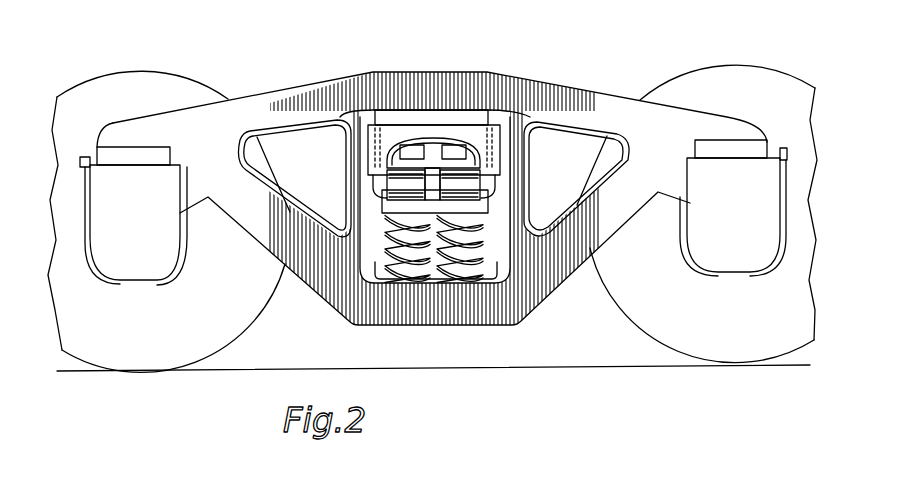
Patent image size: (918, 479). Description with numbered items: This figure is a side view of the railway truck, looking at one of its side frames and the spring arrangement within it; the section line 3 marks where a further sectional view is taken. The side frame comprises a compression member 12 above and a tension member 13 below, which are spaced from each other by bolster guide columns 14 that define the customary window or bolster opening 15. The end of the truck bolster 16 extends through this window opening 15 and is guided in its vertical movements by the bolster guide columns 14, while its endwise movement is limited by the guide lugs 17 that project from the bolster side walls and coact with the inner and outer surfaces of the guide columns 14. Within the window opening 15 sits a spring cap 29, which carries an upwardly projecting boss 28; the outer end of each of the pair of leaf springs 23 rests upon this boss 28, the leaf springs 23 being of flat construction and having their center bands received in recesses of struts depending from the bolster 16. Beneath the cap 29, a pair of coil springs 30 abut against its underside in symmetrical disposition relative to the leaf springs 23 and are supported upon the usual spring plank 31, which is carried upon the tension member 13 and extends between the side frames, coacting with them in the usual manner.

The section line 3- 3 is at (410, 50).
The compression member 12 is at (547, 95).
The tension member 13 is at (547, 290).
The bolster guide columns 14 is at (367, 176).
The bolster opening 15 is at (373, 240).
The truck bolster 16 is at (443, 123).
The guide lugs 17 is at (497, 118).
The leaf springs 23 is at (403, 187).
The boss 28 is at (385, 197).
The spring cap 29 is at (487, 203).
The coil springs 30 is at (473, 266).
The spring plank 31 is at (377, 277).